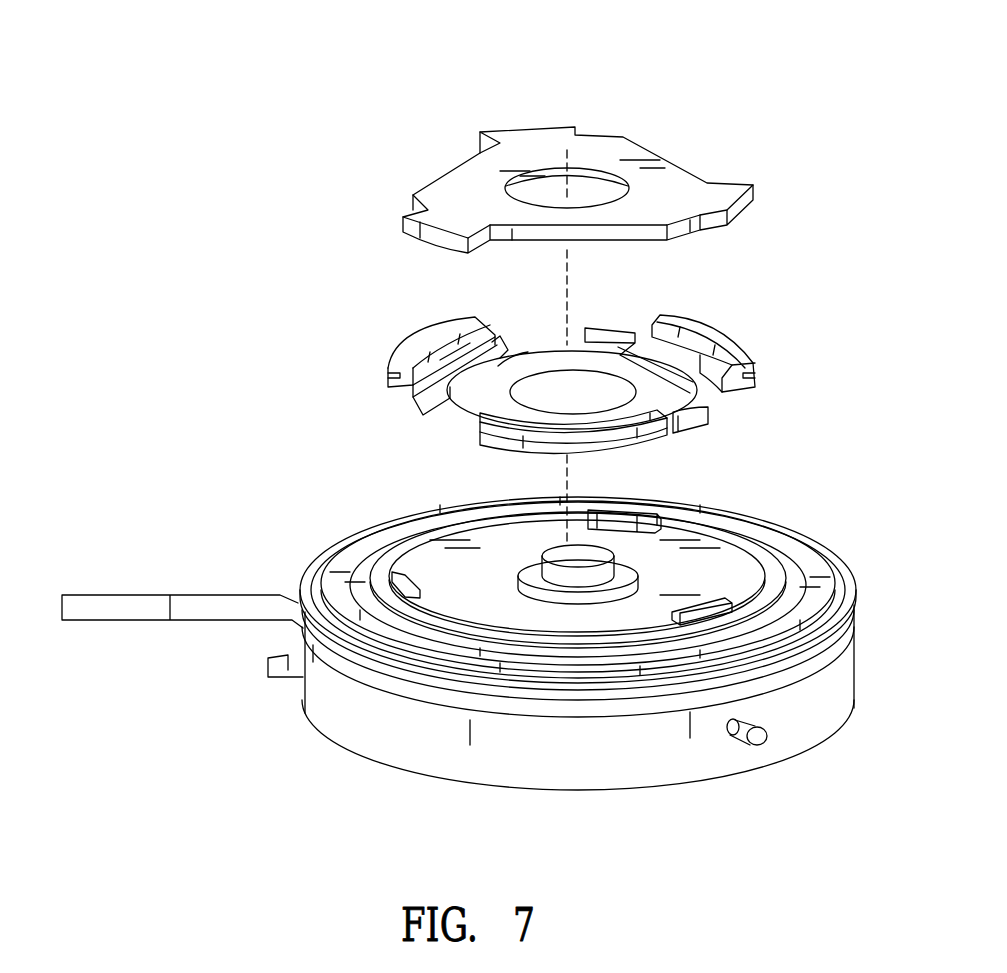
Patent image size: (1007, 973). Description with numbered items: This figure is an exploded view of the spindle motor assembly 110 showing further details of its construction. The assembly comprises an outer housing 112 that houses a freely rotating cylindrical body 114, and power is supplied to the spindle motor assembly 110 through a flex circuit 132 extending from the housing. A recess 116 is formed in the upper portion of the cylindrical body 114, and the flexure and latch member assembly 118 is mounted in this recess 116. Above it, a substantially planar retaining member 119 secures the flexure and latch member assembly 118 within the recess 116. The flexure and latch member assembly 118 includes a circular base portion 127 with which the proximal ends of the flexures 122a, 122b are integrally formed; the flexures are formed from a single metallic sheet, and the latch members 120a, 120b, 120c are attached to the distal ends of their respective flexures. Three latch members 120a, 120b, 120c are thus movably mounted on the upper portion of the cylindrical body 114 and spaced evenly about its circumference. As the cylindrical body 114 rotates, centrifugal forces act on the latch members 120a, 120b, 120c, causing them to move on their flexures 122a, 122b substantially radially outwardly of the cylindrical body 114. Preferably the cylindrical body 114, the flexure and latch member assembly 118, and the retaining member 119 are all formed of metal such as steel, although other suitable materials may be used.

The spindle motor assembly 110 is at (780, 80).
The outer housing 112 is at (810, 707).
The cylindrical body 114 is at (778, 560).
The recess 116 is at (673, 560).
The flexure and latch member assembly 118 is at (467, 418).
The retaining member 119 is at (755, 192).
The latch member 120a is at (418, 337).
The latch member 120b is at (723, 327).
The latch member 120c is at (603, 445).
The flexure 122a is at (505, 355).
The flexure 122b is at (708, 398).
The circular base portion 127 is at (506, 363).
The flex circuit 132 is at (178, 622).